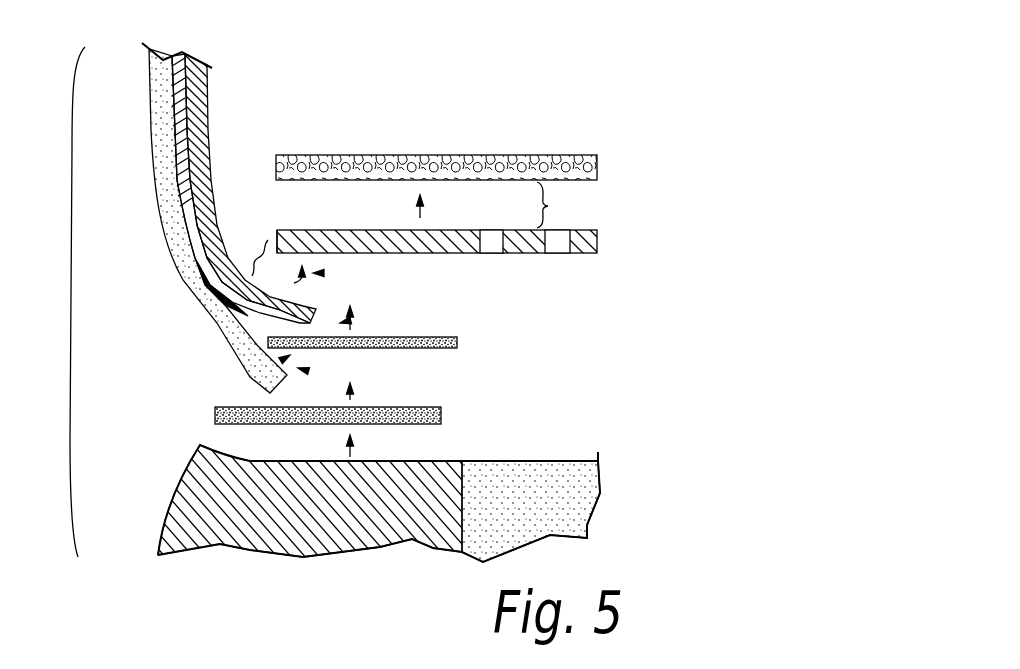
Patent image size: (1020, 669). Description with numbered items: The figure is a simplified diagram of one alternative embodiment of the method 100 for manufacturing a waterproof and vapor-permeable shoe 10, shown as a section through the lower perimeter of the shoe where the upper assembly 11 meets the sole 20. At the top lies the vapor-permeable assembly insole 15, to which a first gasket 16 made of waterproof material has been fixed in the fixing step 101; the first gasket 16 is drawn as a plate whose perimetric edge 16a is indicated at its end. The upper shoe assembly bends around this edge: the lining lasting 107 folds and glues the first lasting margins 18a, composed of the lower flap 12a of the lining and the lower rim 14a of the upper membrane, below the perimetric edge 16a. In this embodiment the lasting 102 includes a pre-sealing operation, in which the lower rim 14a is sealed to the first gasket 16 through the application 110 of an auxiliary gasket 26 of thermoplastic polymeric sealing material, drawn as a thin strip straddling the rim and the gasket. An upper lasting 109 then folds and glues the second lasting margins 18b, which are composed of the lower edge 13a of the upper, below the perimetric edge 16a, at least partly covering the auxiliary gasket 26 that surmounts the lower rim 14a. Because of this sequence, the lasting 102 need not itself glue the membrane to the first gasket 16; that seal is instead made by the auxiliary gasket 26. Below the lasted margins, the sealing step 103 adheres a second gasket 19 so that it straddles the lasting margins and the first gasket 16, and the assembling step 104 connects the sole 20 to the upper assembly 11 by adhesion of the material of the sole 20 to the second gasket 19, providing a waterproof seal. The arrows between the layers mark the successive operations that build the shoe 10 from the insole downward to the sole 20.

The waterproof and vapor-permeable shoe 10 is at (53, 302).
The upper assembly 11 is at (620, 268).
The lower flap of the lining 12a is at (322, 273).
The lower edge of the upper 13a is at (186, 265).
The lower rim of the upper membrane 14a is at (303, 328).
The vapor-permeable assembly insole 15 is at (533, 154).
The first gasket 16 is at (579, 229).
The perimetric edge of the first gasket 16a is at (290, 229).
The first lasting margins 18a is at (322, 293).
The second lasting margins 18b is at (253, 380).
The second gasket 19 is at (388, 424).
The sole 20 is at (164, 524).
The auxiliary gasket 26 is at (466, 343).
The method for manufacturing a waterproof and vapor-permeable shoe 100 is at (578, 110).
The fixing 101 is at (426, 211).
The lasting 102 is at (320, 271).
The sealing 103 is at (356, 388).
The assembling 104 is at (347, 450).
The lining lasting 107 is at (293, 280).
The upper lasting 109 is at (284, 358).
The application of the auxiliary gasket 110 is at (350, 321).